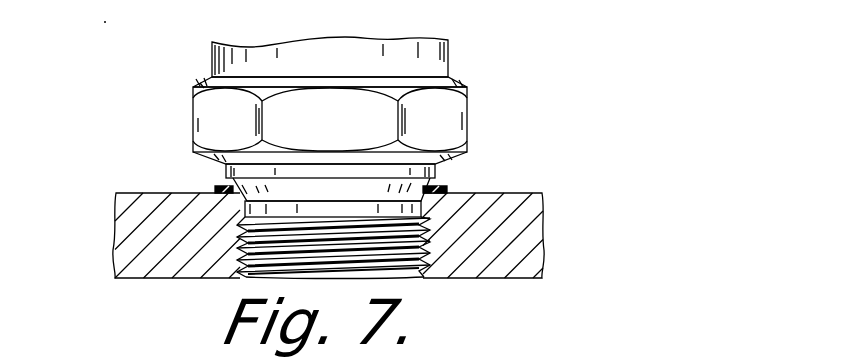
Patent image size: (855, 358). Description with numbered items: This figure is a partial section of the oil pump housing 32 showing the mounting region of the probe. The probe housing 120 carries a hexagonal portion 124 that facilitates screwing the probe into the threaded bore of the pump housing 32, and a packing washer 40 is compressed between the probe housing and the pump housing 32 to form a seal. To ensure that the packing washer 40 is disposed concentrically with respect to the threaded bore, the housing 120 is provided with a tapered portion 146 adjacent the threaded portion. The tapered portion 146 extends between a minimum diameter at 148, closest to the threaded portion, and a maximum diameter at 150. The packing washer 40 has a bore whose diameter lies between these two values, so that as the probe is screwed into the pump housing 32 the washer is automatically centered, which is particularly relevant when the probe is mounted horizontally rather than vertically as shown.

The housing 120 is at (452, 54).
The hexagonal portion 124 is at (460, 122).
The tapered portion 146 is at (463, 164).
The maximum diameter 150 is at (228, 171).
The minimum diameter 148 is at (227, 187).
The packing washer 40 is at (445, 190).
The housing 32 is at (130, 193).